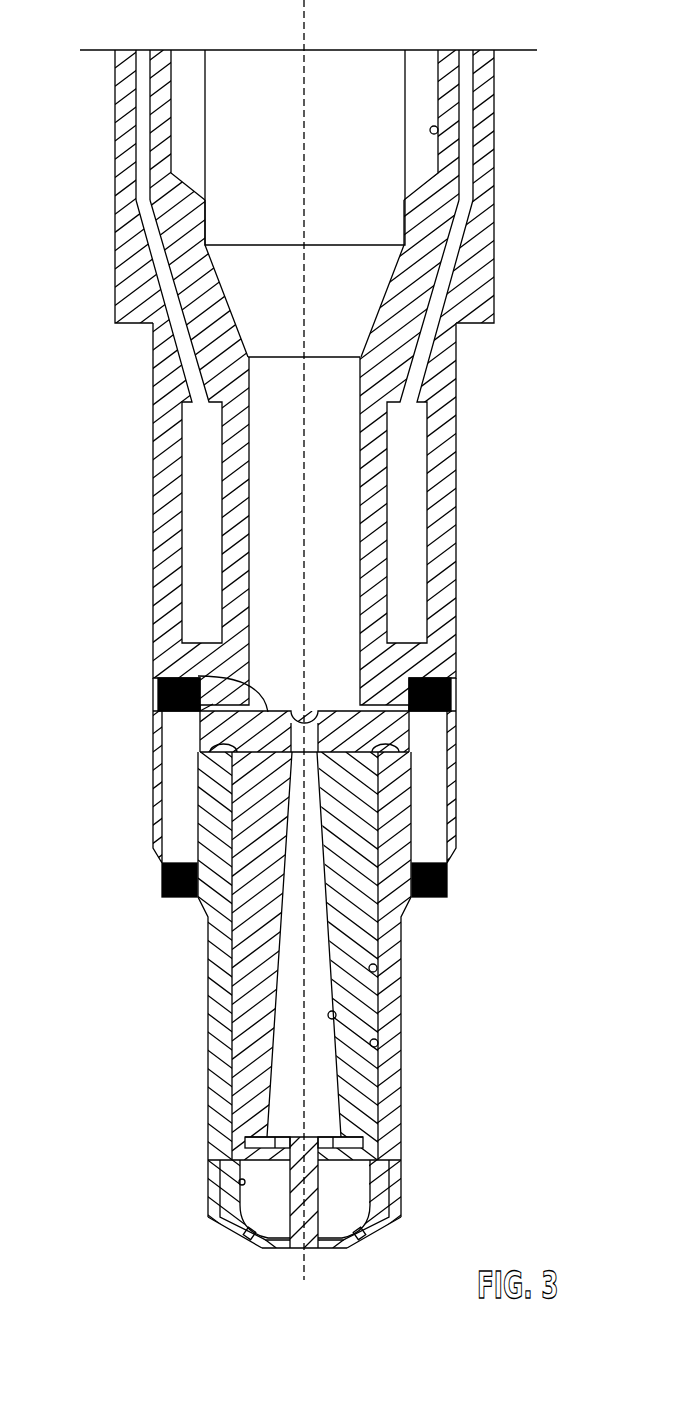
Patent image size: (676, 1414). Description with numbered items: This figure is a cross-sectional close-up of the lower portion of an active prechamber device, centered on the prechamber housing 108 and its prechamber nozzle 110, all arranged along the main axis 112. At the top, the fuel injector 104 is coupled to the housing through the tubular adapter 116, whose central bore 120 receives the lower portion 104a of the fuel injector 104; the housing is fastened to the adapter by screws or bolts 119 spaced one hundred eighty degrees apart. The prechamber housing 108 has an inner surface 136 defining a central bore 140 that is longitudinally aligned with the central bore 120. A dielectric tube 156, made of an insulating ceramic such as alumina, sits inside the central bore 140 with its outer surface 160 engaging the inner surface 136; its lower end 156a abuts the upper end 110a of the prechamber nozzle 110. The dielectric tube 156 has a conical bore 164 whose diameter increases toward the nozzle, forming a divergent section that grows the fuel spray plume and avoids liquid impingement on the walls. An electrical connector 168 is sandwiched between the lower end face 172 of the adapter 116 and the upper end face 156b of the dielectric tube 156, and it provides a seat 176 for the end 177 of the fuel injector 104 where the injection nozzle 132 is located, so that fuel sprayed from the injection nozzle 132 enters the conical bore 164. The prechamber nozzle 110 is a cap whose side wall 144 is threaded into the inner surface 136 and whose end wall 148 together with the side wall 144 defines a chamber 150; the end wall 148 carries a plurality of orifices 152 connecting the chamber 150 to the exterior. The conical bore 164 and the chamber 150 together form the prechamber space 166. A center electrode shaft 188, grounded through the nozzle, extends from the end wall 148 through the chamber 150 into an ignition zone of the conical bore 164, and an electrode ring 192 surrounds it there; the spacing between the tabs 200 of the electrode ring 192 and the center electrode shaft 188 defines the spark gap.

The fuel injector 104 is at (205, 100).
The lower portion of fuel injector 104a is at (388, 225).
The prechamber housing 108 is at (457, 830).
The prechamber nozzle 110 is at (330, 1250).
The upper end of prechamber nozzle 110a is at (262, 1142).
The main axis 112 is at (307, 22).
The adapter 116 is at (457, 475).
The screws or bolts 119 is at (447, 893).
The central bore of adapter 120 is at (437, 128).
The injection nozzle 132 is at (310, 713).
The inner surface of prechamber housing 136 is at (376, 966).
The central bore of prechamber housing 140 is at (377, 1041).
The side wall 144 is at (240, 1187).
The end wall 148 is at (230, 1220).
The chamber 150 is at (240, 1177).
The orifices 152 is at (360, 1240).
The dielectric tube 156 is at (237, 960).
The lower end of dielectric tube 156a is at (393, 1152).
The upper end face of dielectric tube 156b is at (230, 750).
The outer surface of dielectric tube 160 is at (230, 995).
The conical bore 164 is at (335, 1013).
The prechamber space 166 is at (278, 1067).
The electrical connector 168 is at (402, 745).
The lower end face of adapter 172 is at (450, 690).
The seat 176 is at (198, 676).
The end of fuel injector 177 is at (212, 721).
The center electrode shaft 188 is at (320, 1208).
The electrode ring 192 is at (323, 1140).
The tabs 200 is at (273, 1143).